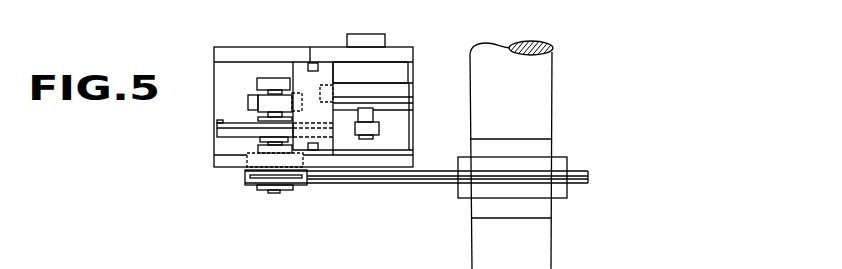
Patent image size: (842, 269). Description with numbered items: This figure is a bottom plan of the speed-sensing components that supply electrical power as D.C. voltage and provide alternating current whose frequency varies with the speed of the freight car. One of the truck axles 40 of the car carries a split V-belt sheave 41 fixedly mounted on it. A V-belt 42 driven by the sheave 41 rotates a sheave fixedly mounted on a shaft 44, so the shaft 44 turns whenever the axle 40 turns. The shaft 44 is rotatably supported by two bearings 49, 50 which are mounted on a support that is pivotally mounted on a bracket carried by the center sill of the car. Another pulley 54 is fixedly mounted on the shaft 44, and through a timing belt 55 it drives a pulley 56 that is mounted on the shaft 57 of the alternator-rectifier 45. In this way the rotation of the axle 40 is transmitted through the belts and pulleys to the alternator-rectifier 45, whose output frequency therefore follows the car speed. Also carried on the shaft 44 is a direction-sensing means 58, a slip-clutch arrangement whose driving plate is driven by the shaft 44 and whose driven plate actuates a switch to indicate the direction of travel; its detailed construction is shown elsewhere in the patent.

The truck axle 40 is at (553, 92).
The split V-belt sheave 41 is at (562, 198).
The V-belt 42 is at (428, 185).
The shaft 44 is at (280, 194).
The alternator-rectifier 45 is at (404, 44).
The bearing 49 is at (248, 102).
The bearing 50 is at (247, 157).
The pulley 54 is at (222, 121).
The timing belt 55 is at (348, 136).
The pulley 56 is at (379, 128).
The shaft 57 is at (374, 138).
The direction-sensing means 58 is at (262, 74).